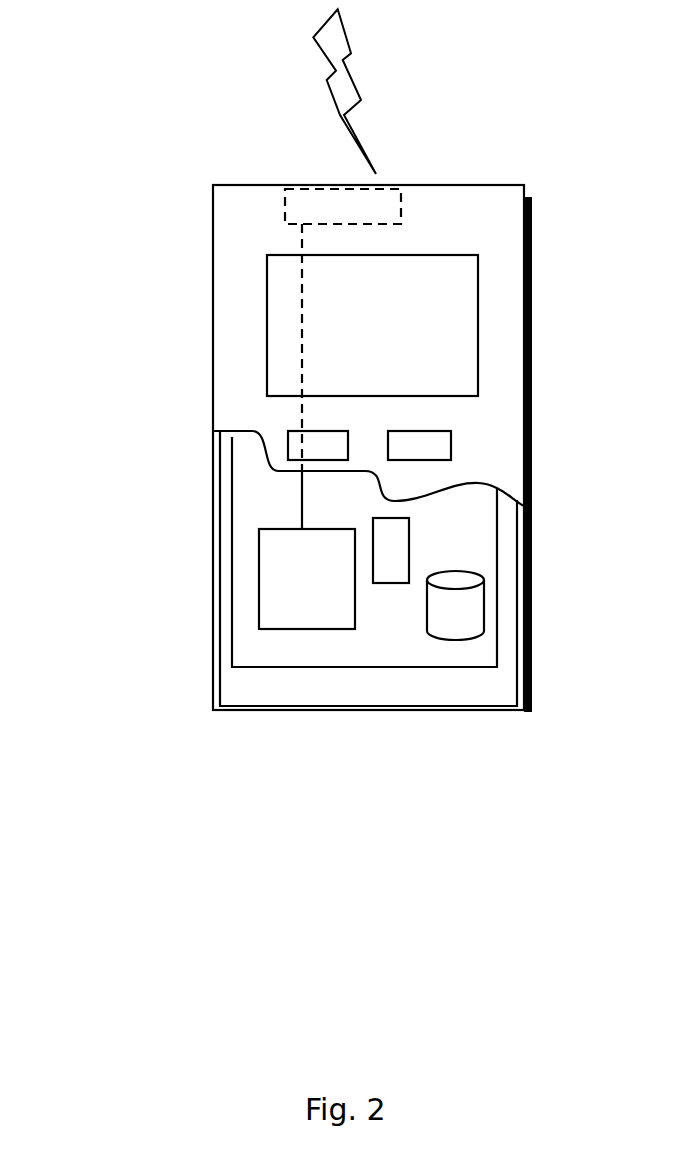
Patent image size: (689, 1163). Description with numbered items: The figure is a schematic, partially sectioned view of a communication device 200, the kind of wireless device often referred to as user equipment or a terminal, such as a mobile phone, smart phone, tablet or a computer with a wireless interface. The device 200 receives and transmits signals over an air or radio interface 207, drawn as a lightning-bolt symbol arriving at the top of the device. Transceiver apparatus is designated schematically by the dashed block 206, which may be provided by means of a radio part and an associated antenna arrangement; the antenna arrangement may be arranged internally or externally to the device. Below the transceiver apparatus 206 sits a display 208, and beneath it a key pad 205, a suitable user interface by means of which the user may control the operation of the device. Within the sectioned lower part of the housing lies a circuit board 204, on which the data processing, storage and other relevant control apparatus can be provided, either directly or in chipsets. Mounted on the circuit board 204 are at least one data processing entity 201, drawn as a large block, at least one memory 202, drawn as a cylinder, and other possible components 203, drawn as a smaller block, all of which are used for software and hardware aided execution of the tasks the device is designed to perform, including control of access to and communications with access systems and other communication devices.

The communication device 200 is at (213, 229).
The data processing entity 201 is at (266, 562).
The memory 202 is at (447, 622).
The other possible components 203 is at (390, 535).
The circuit board 204 is at (258, 648).
The key pad 205 is at (288, 445).
The transceiver apparatus 206 is at (390, 200).
The air or radio interface 207 is at (378, 114).
The display 208 is at (285, 312).